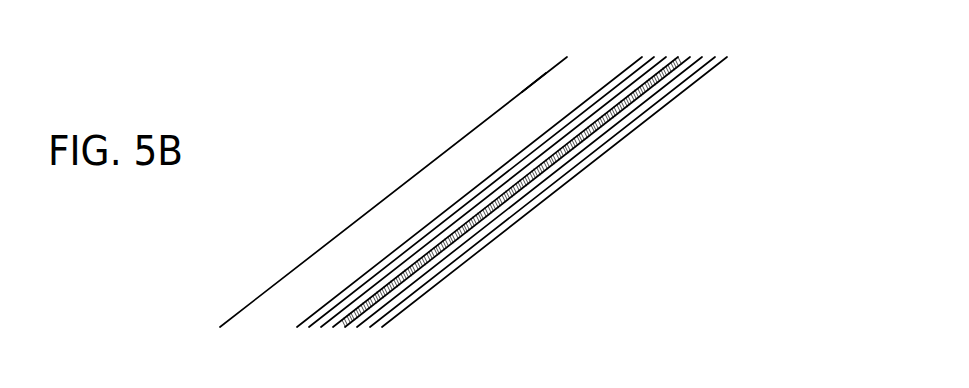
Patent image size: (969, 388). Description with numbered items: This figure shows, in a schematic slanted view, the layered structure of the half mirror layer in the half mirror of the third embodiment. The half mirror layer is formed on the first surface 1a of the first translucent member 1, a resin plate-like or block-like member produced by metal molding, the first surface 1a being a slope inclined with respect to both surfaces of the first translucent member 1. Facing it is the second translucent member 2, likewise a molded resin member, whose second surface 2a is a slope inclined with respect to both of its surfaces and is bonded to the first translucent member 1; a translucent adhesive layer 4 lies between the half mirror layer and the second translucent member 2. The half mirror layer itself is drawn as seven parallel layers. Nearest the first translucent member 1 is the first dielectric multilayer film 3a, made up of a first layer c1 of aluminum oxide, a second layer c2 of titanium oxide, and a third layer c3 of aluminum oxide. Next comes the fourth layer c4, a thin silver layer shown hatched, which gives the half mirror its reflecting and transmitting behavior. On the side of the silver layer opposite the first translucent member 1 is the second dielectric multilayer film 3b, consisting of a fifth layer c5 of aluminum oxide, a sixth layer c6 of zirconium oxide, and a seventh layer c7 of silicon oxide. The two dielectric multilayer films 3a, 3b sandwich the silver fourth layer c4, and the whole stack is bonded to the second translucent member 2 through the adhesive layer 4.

The first translucent member 1 is at (864, 277).
The first surface 1a is at (717, 63).
The second translucent member 2 is at (360, 157).
The second surface 2a is at (476, 129).
The first dielectric multilayer film 3a is at (601, 192).
The second dielectric multilayer film 3b is at (484, 200).
The translucent adhesive layer 4 is at (530, 101).
The first layer c1 is at (673, 92).
The second layer c2 is at (633, 120).
The third layer c3 is at (588, 143).
The fourth layer c4 is at (543, 169).
The fifth layer c5 is at (490, 203).
The sixth layer c6 is at (452, 218).
The seventh layer c7 is at (413, 243).